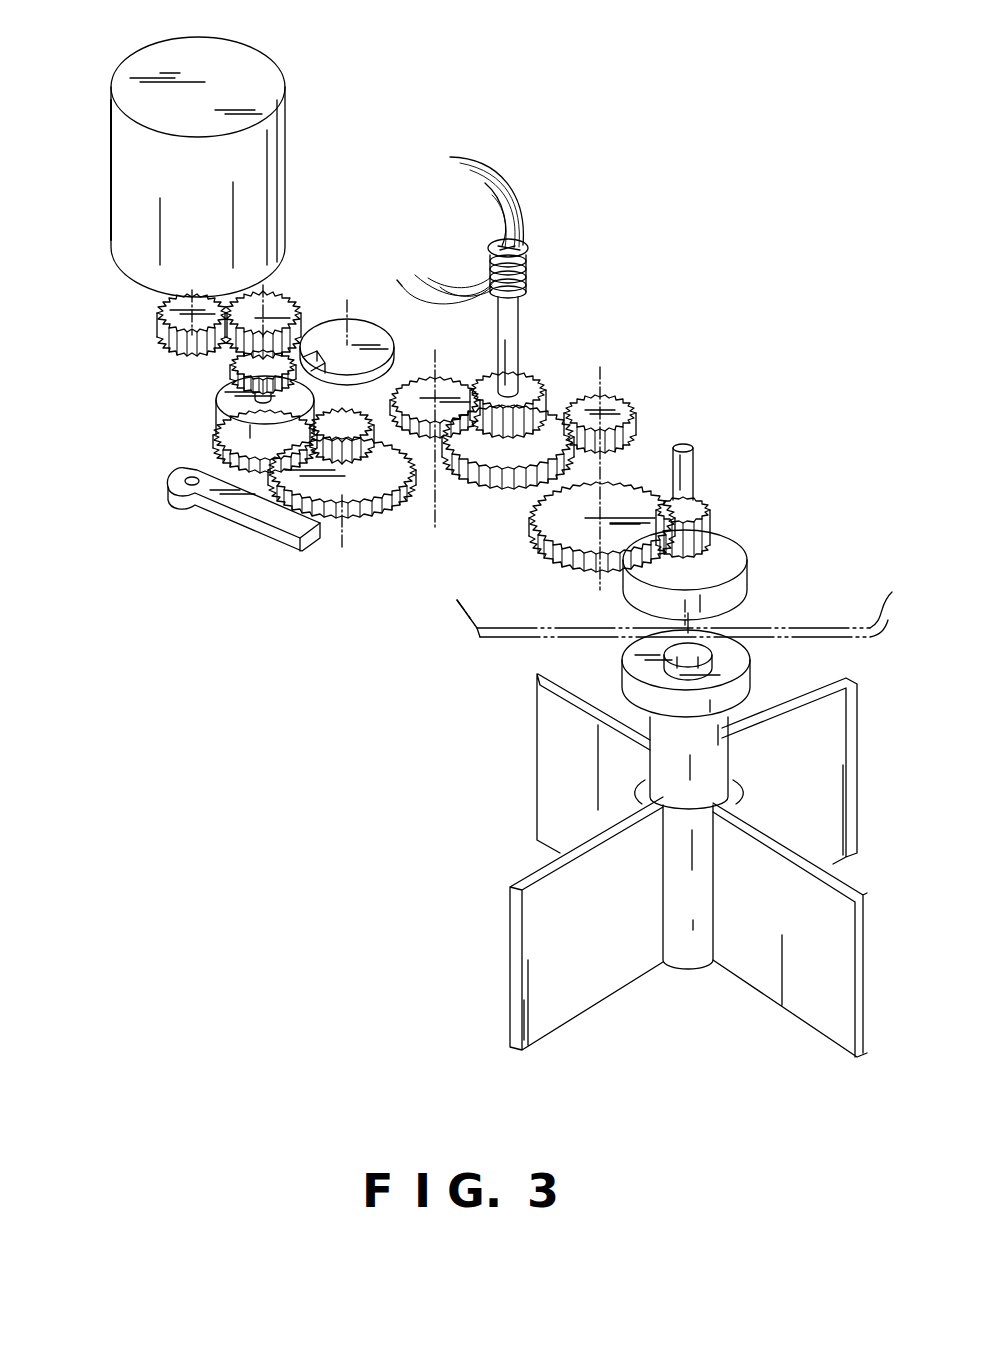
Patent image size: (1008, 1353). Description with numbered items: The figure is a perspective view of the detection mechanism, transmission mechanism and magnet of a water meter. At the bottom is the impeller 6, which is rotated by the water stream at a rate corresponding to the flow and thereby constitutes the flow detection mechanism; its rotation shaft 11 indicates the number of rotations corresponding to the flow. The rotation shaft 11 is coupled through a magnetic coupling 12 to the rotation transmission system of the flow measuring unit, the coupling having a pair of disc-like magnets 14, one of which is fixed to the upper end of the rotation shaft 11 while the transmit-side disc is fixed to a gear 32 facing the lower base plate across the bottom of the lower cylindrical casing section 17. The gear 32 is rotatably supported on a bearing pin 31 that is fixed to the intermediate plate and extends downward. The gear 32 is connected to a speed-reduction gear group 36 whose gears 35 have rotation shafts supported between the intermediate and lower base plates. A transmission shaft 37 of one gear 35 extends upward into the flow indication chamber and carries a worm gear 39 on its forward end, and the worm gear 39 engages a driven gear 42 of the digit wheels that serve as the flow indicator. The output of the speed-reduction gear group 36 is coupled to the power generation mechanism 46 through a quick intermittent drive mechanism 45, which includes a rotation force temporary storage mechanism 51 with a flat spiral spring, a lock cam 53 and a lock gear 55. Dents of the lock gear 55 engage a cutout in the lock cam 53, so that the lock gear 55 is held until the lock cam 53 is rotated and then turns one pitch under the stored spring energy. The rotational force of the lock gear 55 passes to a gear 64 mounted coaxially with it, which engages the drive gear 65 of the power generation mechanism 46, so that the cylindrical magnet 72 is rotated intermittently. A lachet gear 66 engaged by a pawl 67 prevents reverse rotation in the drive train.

The impeller 6 is at (533, 927).
The rotation shaft 11 is at (707, 735).
The magnetic coupling 12 is at (740, 613).
The disc-like magnets 14 is at (737, 545).
The lower cylindrical casing section 17 is at (490, 636).
The bearing pin 31 is at (695, 468).
The gear 32 is at (710, 518).
The gears 35 is at (542, 386).
The speed-reduction gear group 36 is at (631, 393).
The transmission shaft 37 is at (520, 318).
The worm gear 39 is at (527, 252).
The driven gear 42 is at (506, 190).
The quick intermittent drive mechanism 45 is at (355, 313).
The power generation mechanism 46 is at (287, 182).
The rotation force temporary storage mechanism 51 is at (214, 433).
The lock cam 53 is at (372, 340).
The lock gear 55 is at (232, 370).
The gear 64 is at (290, 300).
The drive gear 65 is at (162, 326).
The lachet gear 66 is at (360, 525).
The pawl 67 is at (245, 508).
The cylindrical magnet 72 is at (130, 183).